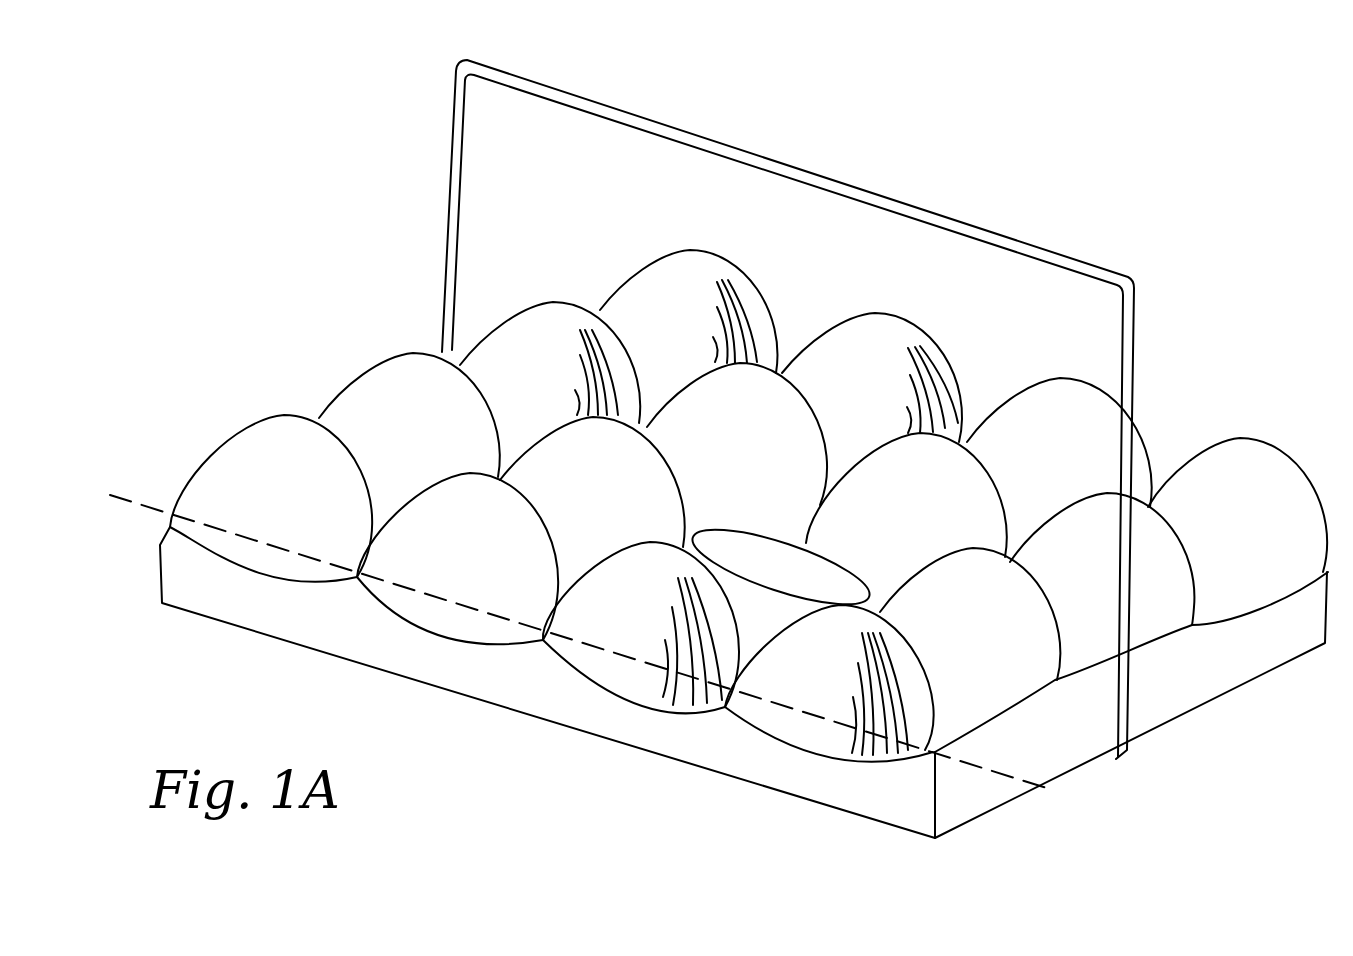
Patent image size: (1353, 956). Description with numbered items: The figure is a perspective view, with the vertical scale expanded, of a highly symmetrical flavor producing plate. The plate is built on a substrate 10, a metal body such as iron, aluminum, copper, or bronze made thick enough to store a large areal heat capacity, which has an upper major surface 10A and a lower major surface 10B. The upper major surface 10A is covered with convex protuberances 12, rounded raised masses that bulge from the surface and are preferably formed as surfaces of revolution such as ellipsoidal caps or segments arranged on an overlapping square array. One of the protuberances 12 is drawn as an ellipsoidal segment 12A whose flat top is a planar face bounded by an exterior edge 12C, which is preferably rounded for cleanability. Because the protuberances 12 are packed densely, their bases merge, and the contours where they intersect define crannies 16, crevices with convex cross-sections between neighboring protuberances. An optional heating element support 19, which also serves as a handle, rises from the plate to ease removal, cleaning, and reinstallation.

The substrate 10 is at (165, 574).
The upper major surface 10A is at (140, 500).
The lower major surface 10B is at (557, 724).
The convex protuberances 12 is at (1248, 442).
The ellipsoidal segment 12A is at (815, 582).
The exterior edge 12C is at (775, 590).
The crannies 16 is at (355, 577).
The heating element support 19 is at (1135, 327).